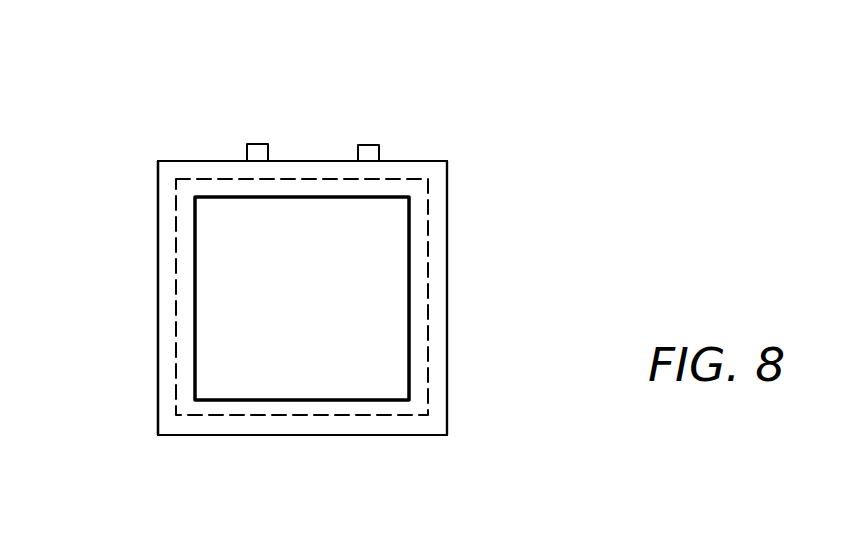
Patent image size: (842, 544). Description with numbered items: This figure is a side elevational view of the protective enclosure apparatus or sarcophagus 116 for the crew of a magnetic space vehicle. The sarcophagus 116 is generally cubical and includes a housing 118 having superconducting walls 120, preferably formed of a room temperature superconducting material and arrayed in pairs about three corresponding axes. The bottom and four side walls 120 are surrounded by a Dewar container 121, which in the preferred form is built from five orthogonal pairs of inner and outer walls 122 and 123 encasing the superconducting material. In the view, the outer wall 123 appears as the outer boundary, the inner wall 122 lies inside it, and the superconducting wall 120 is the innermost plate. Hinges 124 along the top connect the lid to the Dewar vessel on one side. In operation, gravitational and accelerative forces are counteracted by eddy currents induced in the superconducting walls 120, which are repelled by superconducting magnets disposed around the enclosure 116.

The protective enclosure apparatus 116 is at (352, 122).
The housing 118 is at (222, 161).
The superconducting walls 120 is at (362, 330).
The Dewar container 121 is at (166, 176).
The inner walls 122 is at (158, 302).
The outer walls 123 is at (430, 232).
The hinges 124 is at (260, 150).